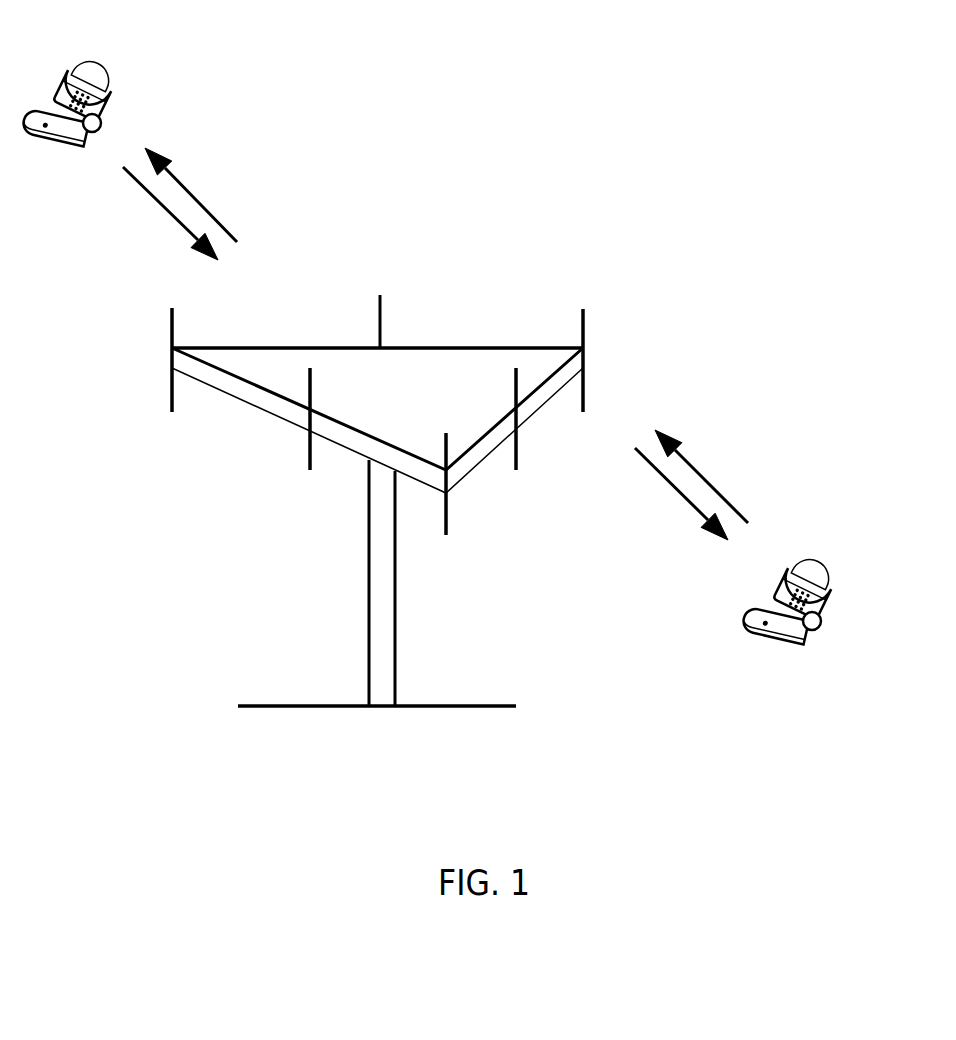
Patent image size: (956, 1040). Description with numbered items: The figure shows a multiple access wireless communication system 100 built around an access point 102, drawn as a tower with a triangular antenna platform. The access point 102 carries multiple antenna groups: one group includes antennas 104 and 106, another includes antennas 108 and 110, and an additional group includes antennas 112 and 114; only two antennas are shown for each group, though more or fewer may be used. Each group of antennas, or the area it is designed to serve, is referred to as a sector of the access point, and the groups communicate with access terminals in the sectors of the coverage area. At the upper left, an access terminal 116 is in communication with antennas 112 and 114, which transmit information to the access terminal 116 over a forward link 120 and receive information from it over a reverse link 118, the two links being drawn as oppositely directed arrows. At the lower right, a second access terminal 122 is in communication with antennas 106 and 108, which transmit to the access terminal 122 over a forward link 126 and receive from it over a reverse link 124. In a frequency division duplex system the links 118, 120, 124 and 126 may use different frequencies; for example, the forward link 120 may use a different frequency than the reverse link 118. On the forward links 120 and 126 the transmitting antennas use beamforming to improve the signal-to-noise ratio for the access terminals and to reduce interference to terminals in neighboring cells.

The multiple access wireless communication system 100 is at (672, 75).
The access point 102 is at (380, 707).
The antenna 104 is at (583, 313).
The antenna 106 is at (516, 467).
The antenna 108 is at (446, 532).
The antenna 110 is at (310, 467).
The antenna 112 is at (172, 313).
The antenna 114 is at (380, 298).
The access terminal 116 is at (108, 53).
The reverse link 118 is at (190, 191).
The forward link 120 is at (168, 212).
The access terminal 122 is at (828, 551).
The reverse link 124 is at (682, 497).
The forward link 126 is at (705, 474).